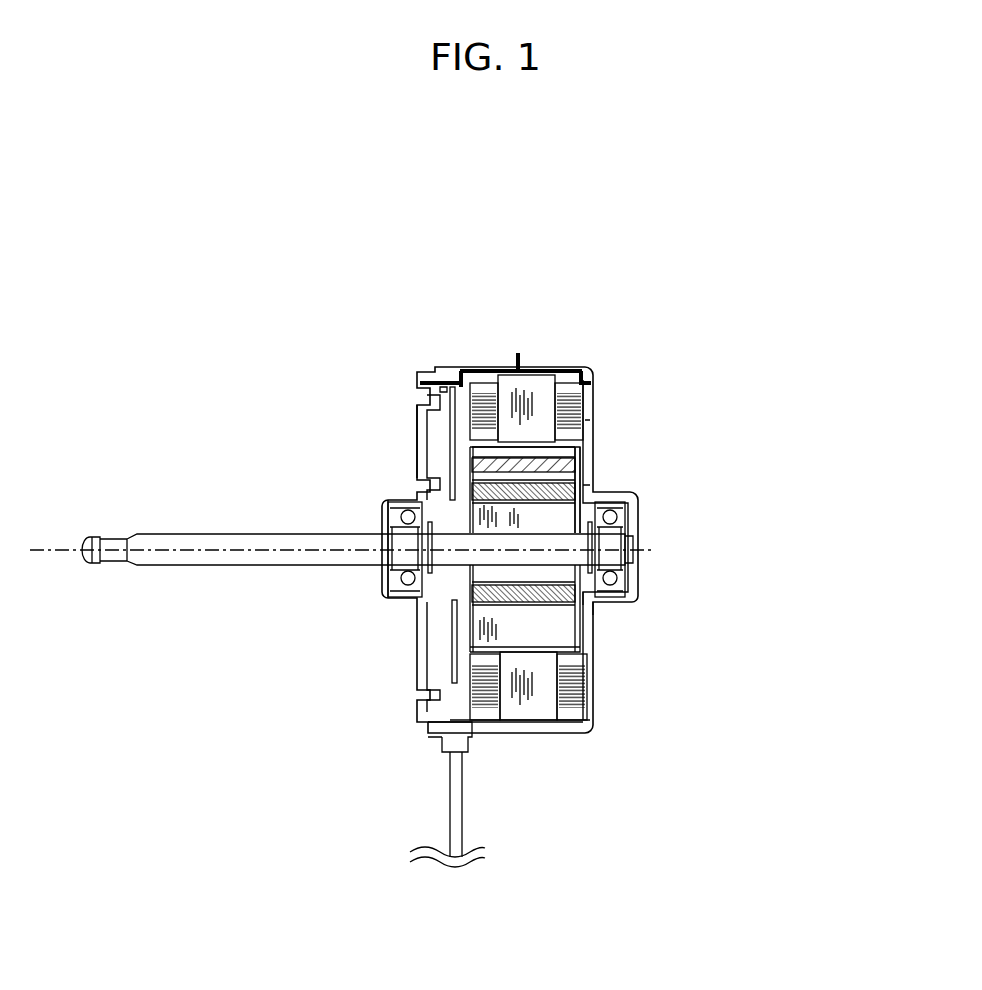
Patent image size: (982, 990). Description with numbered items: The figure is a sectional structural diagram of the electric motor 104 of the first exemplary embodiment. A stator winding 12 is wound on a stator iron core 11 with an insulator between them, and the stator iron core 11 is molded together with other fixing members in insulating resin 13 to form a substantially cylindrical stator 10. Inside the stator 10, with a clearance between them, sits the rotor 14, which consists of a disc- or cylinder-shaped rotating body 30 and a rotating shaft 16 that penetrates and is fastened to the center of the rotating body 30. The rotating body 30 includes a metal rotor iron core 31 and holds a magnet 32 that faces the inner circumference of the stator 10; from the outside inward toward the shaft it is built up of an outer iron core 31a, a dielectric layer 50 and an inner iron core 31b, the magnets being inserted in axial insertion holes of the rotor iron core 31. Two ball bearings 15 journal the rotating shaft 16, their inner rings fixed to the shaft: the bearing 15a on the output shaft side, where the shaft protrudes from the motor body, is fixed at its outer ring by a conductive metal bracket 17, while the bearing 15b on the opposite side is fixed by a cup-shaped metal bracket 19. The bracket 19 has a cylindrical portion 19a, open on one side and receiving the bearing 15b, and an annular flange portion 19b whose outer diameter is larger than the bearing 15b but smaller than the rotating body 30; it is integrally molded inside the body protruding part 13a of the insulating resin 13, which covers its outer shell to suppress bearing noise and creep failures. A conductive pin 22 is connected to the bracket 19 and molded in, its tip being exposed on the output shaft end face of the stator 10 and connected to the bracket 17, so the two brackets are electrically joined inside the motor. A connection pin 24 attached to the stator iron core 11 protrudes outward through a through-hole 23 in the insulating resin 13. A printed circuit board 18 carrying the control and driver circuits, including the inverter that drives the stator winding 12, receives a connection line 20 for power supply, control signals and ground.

The stator 10 is at (773, 187).
The stator iron core 11 is at (556, 368).
The stator winding 12 is at (639, 458).
The insulating resin 13 is at (445, 373).
The body protruding part 13a is at (615, 600).
The rotor 14 is at (357, 555).
The bearings 15 is at (535, 598).
The bearing on the output shaft side 15a is at (397, 593).
The bearing opposite the output shaft side 15b is at (603, 527).
The rotating shaft 16 is at (173, 553).
The bracket 17 is at (415, 408).
The printed circuit board 18 is at (450, 412).
The bracket 19 is at (625, 578).
The cylindrical portion 19a is at (640, 502).
The flange portion 19b is at (555, 518).
The connection line 20 is at (457, 792).
The conductive pin 22 is at (492, 372).
The through-hole 23 is at (540, 390).
The connection pin 24 is at (518, 367).
The rotating body 30 is at (499, 489).
The rotor iron core 31 is at (531, 489).
The outer iron core 31a is at (480, 468).
The inner iron core 31b is at (472, 507).
The magnet 32 is at (472, 448).
The dielectric layer 50 is at (472, 485).
The electric motor 104 is at (398, 720).